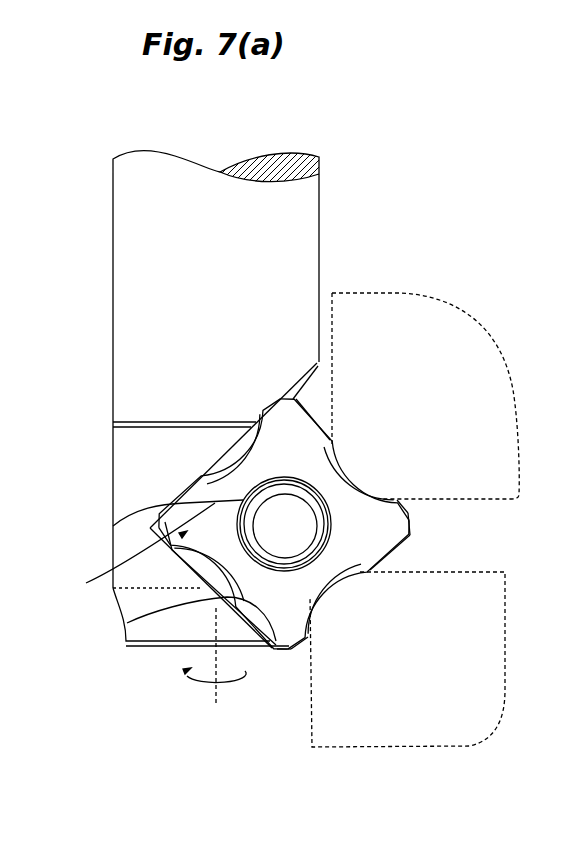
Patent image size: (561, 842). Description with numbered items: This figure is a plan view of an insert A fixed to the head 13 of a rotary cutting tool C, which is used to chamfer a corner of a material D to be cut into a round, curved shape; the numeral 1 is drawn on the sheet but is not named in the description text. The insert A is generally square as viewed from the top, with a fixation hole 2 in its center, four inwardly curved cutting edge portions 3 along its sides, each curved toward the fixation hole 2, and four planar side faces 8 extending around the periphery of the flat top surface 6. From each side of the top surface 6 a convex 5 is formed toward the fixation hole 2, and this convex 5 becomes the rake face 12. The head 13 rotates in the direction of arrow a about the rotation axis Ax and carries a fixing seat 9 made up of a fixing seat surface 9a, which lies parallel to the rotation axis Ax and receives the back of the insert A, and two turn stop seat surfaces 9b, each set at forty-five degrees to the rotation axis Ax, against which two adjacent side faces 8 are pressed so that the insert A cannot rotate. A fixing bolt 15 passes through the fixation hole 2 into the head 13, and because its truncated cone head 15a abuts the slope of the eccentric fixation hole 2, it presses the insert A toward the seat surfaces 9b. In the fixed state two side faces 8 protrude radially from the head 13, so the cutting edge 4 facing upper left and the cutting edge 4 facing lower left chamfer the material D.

The rotary cutting tool C is at (198, 395).
The head 13 is at (137, 339).
The cutting insert 1 is at (240, 521).
The fixation hole 2 is at (318, 514).
The cutting edge portion 3 is at (242, 539).
The cutting edge 4 is at (340, 460).
The convex 5 is at (397, 500).
The top surface 6 is at (140, 550).
The side face 8 is at (318, 405).
The fixing seat 9 is at (183, 545).
The fixing seat surface 9a is at (298, 386).
The seat surface 9b is at (258, 419).
The rake face 12 is at (372, 498).
The fixing bolt 15 is at (178, 524).
The head of the fixing bolt 15a is at (277, 517).
The insert A is at (323, 411).
The material to be cut D is at (486, 500).
The rotation axis Ax is at (214, 672).
The arrow a is at (203, 686).